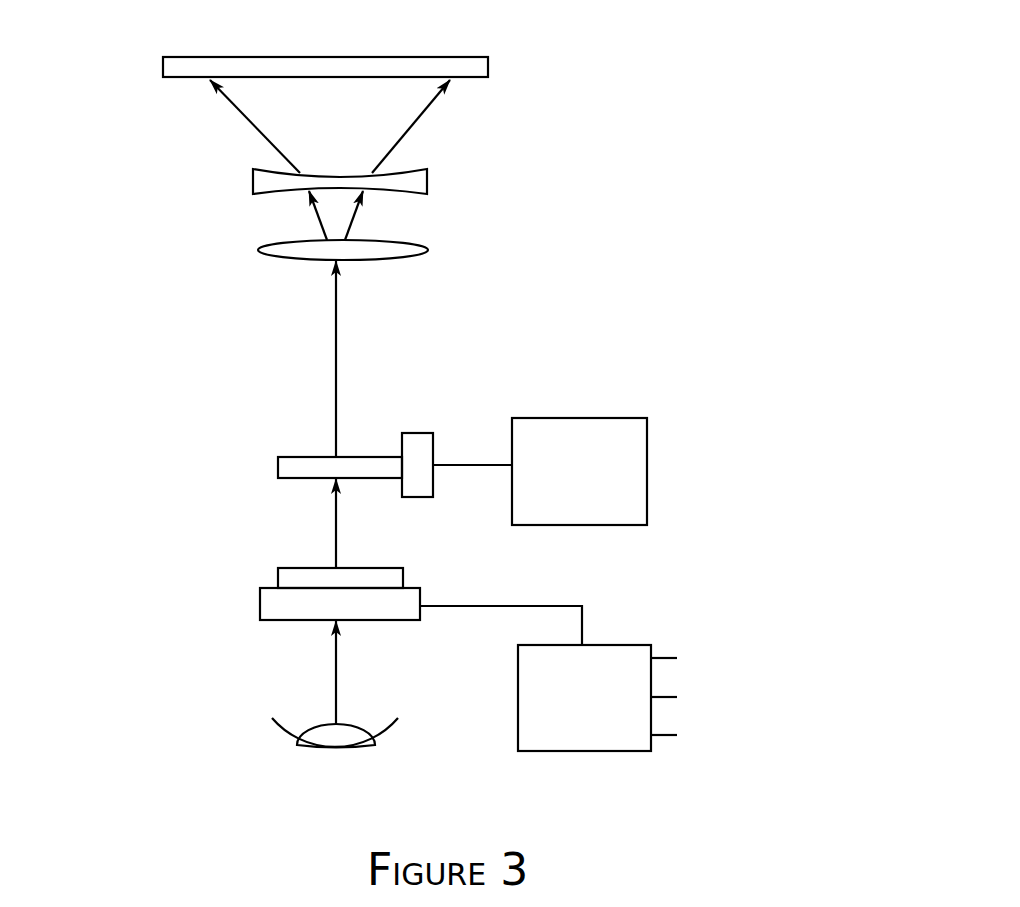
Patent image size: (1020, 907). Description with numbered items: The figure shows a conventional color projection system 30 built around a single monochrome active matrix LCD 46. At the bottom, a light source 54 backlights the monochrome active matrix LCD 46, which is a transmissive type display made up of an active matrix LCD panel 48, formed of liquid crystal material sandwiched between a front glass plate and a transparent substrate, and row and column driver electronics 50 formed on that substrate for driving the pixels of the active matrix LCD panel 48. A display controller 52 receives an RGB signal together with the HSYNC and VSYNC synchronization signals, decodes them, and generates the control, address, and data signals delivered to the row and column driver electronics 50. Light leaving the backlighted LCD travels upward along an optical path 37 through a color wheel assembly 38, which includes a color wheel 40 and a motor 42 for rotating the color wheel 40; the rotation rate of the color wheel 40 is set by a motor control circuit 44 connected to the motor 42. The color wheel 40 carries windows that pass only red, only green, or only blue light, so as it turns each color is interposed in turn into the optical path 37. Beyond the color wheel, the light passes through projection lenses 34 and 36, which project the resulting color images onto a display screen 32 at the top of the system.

The color projection system 30 is at (132, 519).
The display screen 32 is at (373, 57).
The projection lens 34 is at (427, 182).
The projection lens 36 is at (427, 250).
The optical path 37 is at (337, 373).
The color wheel assembly 38 is at (282, 419).
The color wheel 40 is at (293, 456).
The motor 42 is at (413, 433).
The motor control circuit 44 is at (603, 418).
The monochrome active matrix LCD 46 is at (236, 569).
The active matrix LCD panel 48 is at (303, 568).
The row and column driver electronics 50 is at (285, 620).
The display controller 52 is at (510, 707).
The light source 54 is at (285, 737).